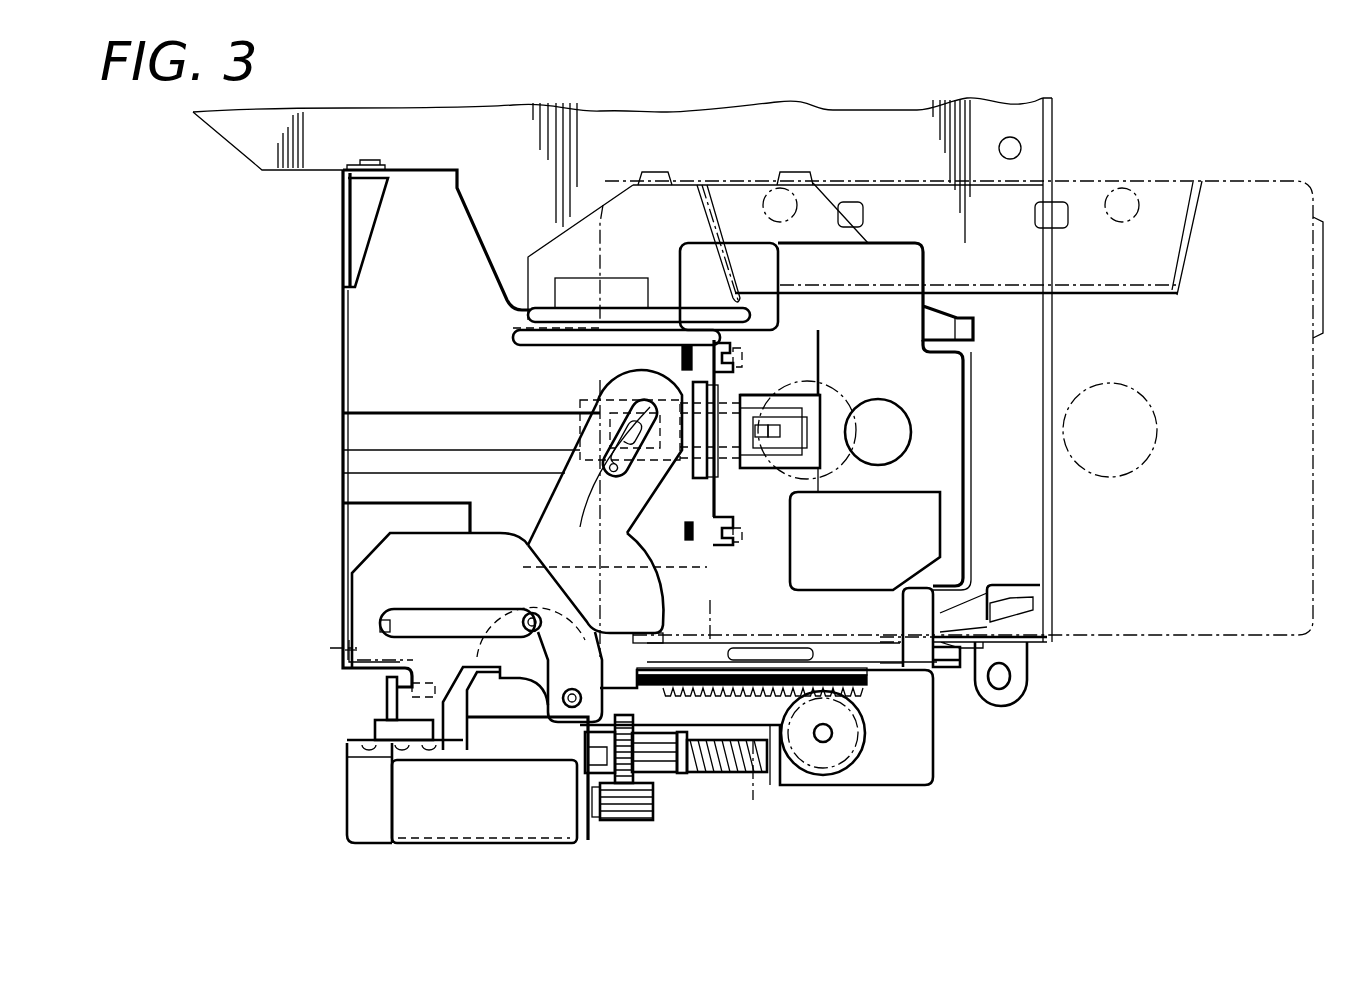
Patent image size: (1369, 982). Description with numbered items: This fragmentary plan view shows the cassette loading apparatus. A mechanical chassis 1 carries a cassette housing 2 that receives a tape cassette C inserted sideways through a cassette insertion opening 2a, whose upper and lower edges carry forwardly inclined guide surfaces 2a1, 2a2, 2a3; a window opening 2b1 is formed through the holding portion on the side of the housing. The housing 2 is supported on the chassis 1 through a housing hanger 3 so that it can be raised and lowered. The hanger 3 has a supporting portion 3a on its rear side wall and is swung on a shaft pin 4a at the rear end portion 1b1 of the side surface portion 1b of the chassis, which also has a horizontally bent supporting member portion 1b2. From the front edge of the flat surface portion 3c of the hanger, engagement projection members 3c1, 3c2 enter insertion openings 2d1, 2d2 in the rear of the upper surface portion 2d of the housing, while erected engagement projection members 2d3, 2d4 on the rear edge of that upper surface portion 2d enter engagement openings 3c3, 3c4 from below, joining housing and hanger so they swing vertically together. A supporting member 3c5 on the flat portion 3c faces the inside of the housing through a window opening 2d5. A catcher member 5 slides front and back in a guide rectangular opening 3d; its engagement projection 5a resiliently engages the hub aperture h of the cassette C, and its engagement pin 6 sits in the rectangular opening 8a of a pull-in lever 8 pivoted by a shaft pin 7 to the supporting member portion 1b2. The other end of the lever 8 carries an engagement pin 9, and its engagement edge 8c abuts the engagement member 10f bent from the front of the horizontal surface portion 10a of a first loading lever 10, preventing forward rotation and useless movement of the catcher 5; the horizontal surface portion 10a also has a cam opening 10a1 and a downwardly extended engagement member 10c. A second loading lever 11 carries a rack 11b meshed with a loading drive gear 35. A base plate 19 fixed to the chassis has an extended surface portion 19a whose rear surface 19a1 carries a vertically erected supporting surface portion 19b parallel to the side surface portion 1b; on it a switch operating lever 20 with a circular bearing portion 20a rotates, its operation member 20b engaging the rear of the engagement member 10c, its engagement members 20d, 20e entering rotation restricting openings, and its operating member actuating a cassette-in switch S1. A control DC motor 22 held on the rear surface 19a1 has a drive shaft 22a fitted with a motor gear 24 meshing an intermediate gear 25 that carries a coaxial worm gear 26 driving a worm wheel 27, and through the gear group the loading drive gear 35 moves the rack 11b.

The mechanical chassis 1 is at (635, 135).
The tape cassette C is at (1313, 430).
The hub aperture h is at (1117, 392).
The cassette housing 2 is at (900, 240).
The cassette insertion opening 2a is at (972, 405).
The guide surface 2a1 is at (972, 462).
The guide surface 2a2 is at (973, 330).
The guide surface 2a3 is at (1013, 600).
The window opening 2b1 is at (775, 185).
The upper surface portion 2d is at (905, 262).
The insertion opening 2d1 is at (760, 385).
The insertion opening 2d2 is at (735, 533).
The erected engagement projection member 2d3 is at (680, 348).
The erected engagement projection member 2d4 is at (703, 543).
The window opening 2d5 is at (700, 247).
The housing hanger 3 is at (340, 310).
The supporting portion 3a is at (353, 160).
The flat surface portion 3c is at (373, 357).
The engagement projection member 3c1 is at (742, 358).
The engagement projection member 3c2 is at (728, 528).
The engagement opening 3c3 is at (683, 357).
The engagement opening 3c4 is at (683, 528).
The supporting member 3c5 is at (720, 320).
The guide rectangular opening 3d is at (447, 413).
The shaft pin 4a is at (367, 160).
The catcher member 5 is at (830, 470).
The engagement projection 5a is at (800, 432).
The engagement pin 6 is at (617, 390).
The shaft pin 7 is at (523, 620).
The pull-in lever 8 is at (580, 480).
The rectangular opening 8a is at (596, 479).
The engagement edge 8c is at (643, 620).
The engagement pin 9 is at (567, 703).
The first loading lever 10 is at (868, 688).
The horizontal surface portion 10a is at (380, 570).
The cam opening 10a1 is at (385, 618).
The engagement member 10c is at (477, 717).
The engagement member 10f is at (667, 627).
The second loading lever 11 is at (840, 673).
The rack 11b is at (867, 690).
The base plate 19 is at (935, 770).
The extended surface portion 19a is at (873, 773).
The rear surface 19a1 is at (372, 840).
The supporting surface portion 19b is at (377, 750).
The switch operating lever 20 is at (377, 697).
The circular bearing portion 20a is at (378, 740).
The operation member 20b is at (375, 728).
The engagement member 20d is at (430, 750).
The engagement member 20e is at (357, 833).
The control DC motor 22 is at (483, 827).
The drive shaft 22a is at (613, 823).
The motor gear 24 is at (640, 820).
The intermediate gear 25 is at (633, 753).
The worm gear 26 is at (727, 773).
The worm wheel 27 is at (755, 800).
The loading drive gear 35 is at (807, 787).
The cassette-in switch S1 is at (457, 757).
The side surface portion 1b is at (343, 660).
The rear end portion 1b1 is at (340, 643).
The supporting member portion 1b2 is at (477, 580).